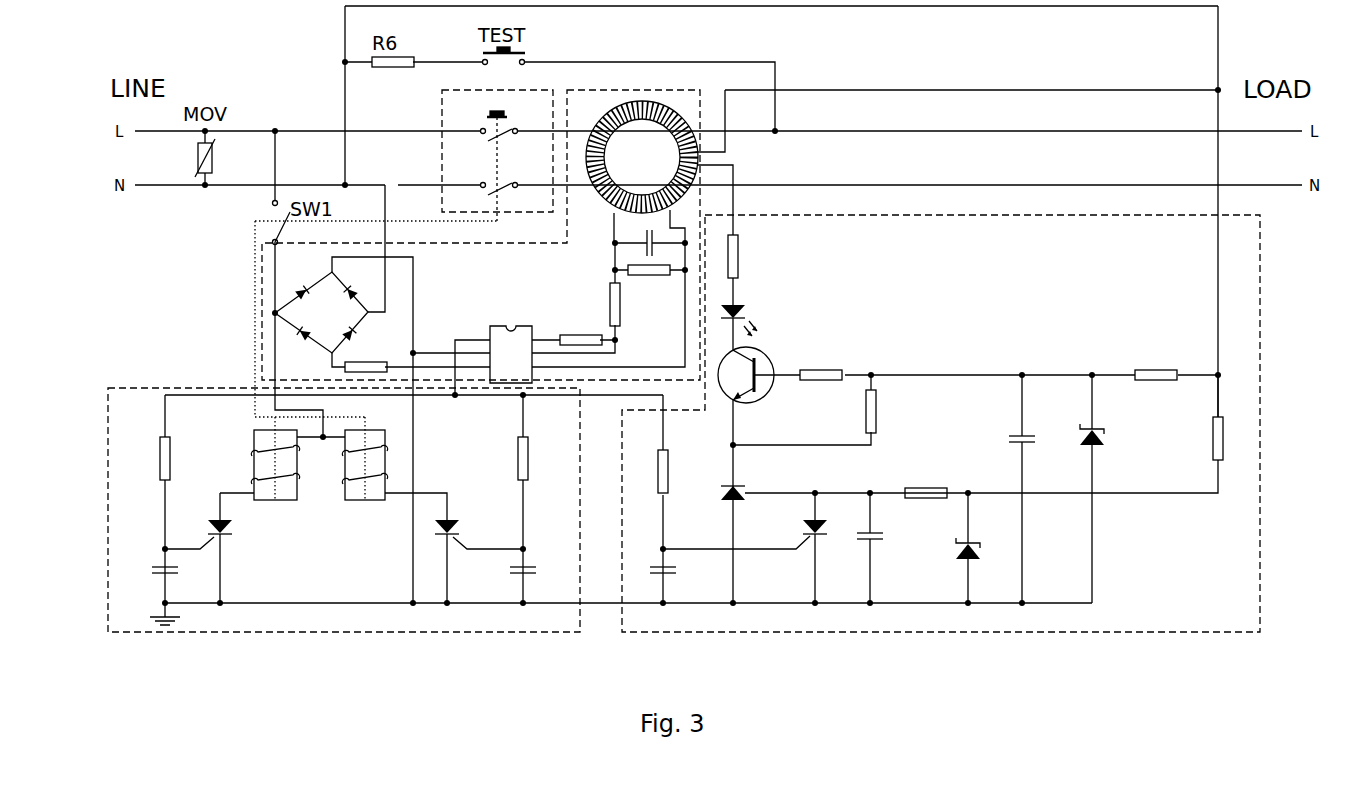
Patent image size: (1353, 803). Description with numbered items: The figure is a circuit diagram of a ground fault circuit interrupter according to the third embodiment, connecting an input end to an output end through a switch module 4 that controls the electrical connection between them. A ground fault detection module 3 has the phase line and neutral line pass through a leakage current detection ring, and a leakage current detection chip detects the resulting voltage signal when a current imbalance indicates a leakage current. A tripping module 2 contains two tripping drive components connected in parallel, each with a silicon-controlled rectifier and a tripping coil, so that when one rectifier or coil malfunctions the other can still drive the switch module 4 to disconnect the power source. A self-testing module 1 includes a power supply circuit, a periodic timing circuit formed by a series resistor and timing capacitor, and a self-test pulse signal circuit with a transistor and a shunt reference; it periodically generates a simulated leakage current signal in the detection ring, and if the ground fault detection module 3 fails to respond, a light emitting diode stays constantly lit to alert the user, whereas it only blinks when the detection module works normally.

The self-testing module 1 is at (1242, 366).
The tripping module 2 is at (132, 505).
The ground fault detection module 3 is at (588, 122).
The switch module 4 is at (538, 122).